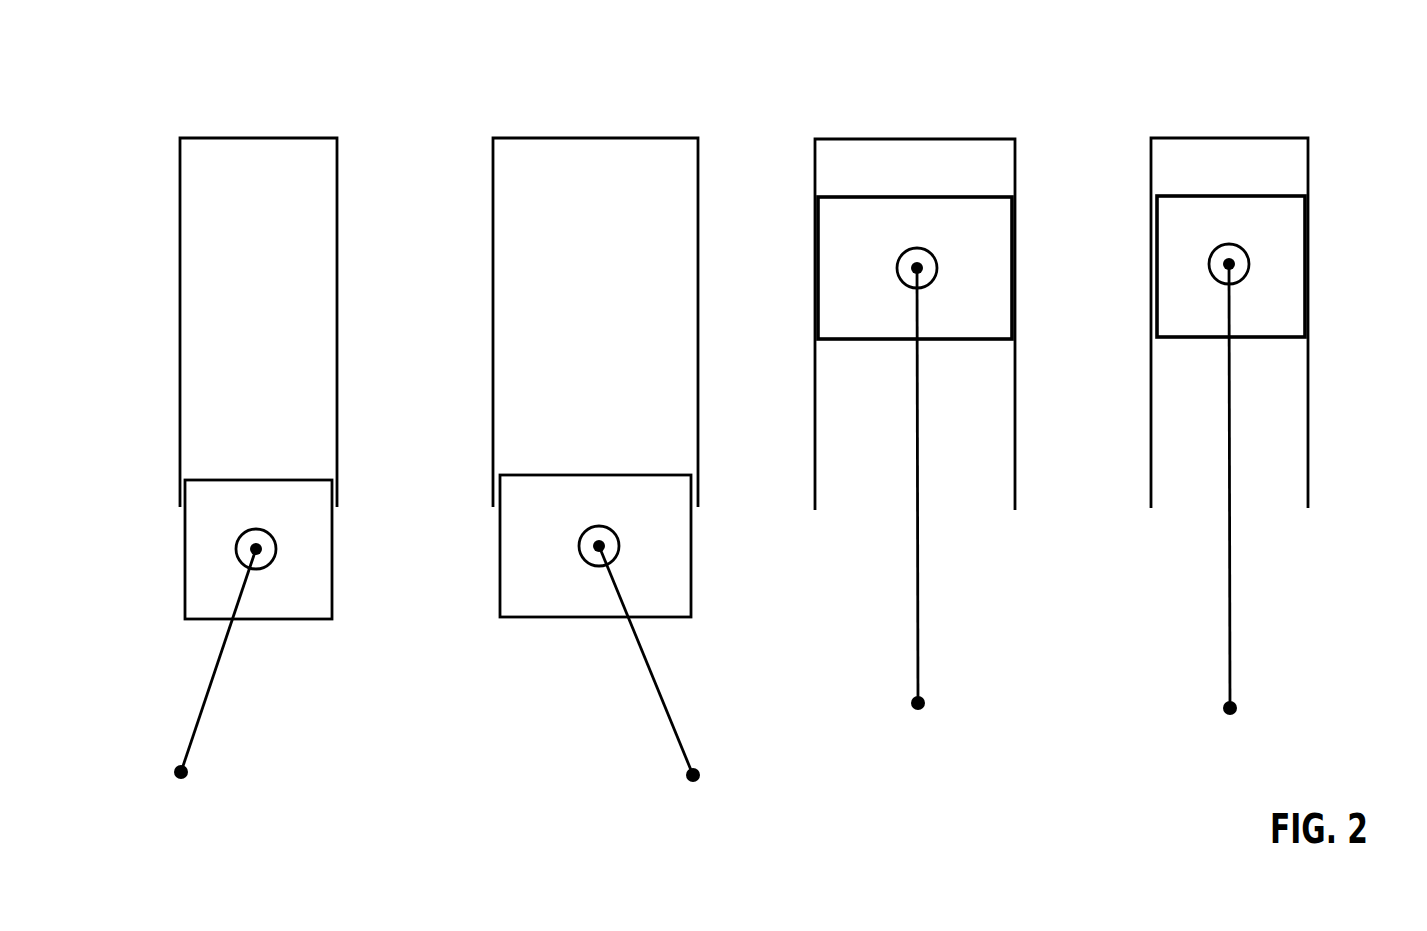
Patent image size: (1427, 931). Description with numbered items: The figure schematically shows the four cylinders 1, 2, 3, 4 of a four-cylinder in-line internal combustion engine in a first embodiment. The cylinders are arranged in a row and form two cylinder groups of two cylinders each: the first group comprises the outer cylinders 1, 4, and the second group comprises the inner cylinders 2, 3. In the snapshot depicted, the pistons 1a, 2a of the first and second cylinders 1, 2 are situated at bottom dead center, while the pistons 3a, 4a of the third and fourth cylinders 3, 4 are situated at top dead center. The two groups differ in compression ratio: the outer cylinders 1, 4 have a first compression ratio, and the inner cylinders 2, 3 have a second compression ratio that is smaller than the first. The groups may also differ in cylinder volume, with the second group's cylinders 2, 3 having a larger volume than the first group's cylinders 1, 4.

The first cylinder 1 is at (263, 158).
The piston of the first cylinder 1a is at (300, 607).
The second cylinder 2 is at (565, 178).
The piston of the second cylinder 2a is at (523, 598).
The third cylinder 3 is at (875, 168).
The piston of the third cylinder 3a is at (962, 225).
The fourth cylinder 4 is at (1203, 157).
The piston of the fourth cylinder 4a is at (1263, 217).